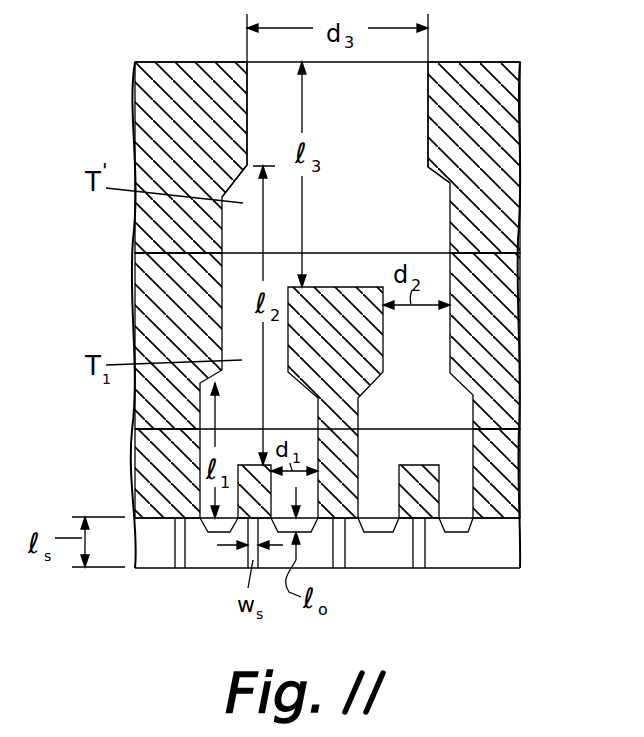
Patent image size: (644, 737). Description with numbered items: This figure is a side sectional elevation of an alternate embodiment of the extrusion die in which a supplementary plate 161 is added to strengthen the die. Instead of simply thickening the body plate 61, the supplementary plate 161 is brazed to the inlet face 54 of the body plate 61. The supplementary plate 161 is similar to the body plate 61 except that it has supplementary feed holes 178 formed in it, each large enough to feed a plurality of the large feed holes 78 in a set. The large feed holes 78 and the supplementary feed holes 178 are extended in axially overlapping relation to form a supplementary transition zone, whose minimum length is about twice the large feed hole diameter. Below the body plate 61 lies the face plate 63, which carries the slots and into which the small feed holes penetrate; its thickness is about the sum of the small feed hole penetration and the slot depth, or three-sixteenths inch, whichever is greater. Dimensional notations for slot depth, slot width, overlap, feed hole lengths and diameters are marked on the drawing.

The supplementary plate 161 is at (520, 140).
The supplementary feed holes 178 is at (428, 107).
The inlet face 54 is at (498, 253).
The body plate 61 is at (519, 328).
The large feed holes 78 is at (452, 342).
The face plate 63 is at (518, 476).